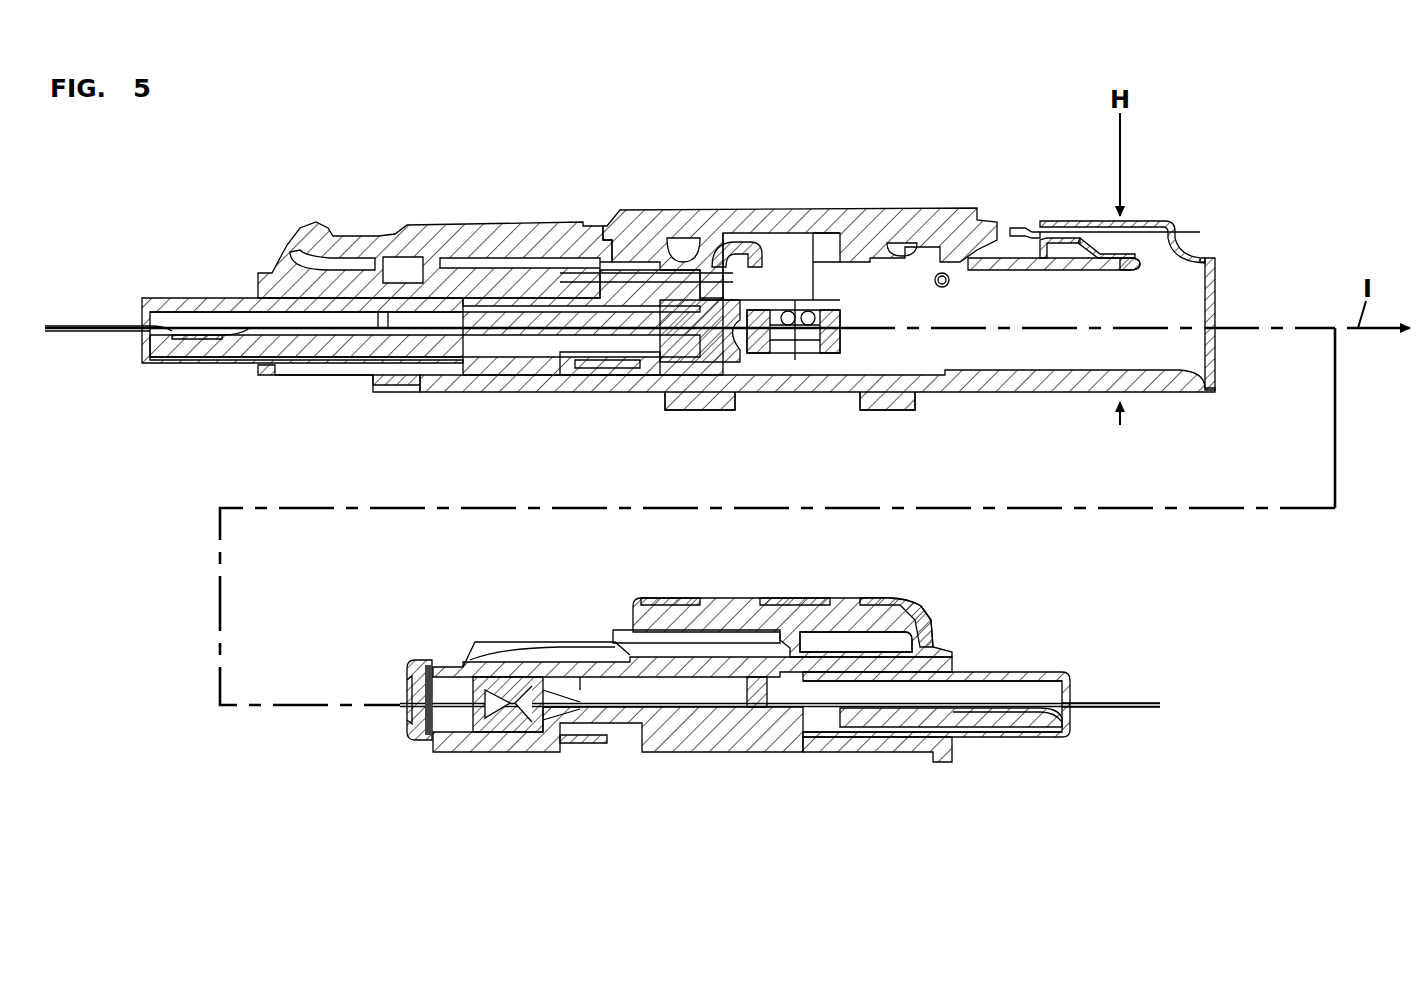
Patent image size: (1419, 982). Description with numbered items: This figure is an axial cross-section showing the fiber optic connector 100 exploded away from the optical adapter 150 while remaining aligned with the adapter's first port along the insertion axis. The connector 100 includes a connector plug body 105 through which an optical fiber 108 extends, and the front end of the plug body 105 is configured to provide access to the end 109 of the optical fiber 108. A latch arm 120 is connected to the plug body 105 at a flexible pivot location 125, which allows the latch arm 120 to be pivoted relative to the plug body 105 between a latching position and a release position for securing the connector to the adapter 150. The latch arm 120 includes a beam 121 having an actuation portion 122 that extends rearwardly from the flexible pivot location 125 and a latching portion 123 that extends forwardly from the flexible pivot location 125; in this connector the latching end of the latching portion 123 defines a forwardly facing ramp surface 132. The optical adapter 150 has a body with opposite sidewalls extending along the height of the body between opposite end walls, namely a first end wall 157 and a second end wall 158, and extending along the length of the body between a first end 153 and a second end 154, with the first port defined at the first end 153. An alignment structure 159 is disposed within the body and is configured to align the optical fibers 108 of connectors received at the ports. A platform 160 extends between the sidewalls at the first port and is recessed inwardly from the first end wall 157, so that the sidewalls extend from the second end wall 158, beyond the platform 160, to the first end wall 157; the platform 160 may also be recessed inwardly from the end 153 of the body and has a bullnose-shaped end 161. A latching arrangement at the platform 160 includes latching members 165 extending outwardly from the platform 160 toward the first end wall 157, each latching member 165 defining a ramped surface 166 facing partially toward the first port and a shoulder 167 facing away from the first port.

The fiber optic connector 100 is at (318, 382).
The connector plug body 105 is at (682, 754).
The optical fiber 108 is at (458, 712).
The end of optical fiber 109 is at (418, 706).
The latch arm 120 is at (434, 206).
The beam 121 is at (790, 600).
The actuation portion 122 is at (865, 610).
The latching portion 123 is at (700, 594).
The flexible pivot location 125 is at (780, 650).
The forwardly facing ramp surface 132 is at (640, 630).
The optical adapter 150 is at (857, 198).
The first end 153 is at (1217, 262).
The second end 154 is at (365, 386).
The first end wall 157 is at (1153, 222).
The second end wall 158 is at (1166, 394).
The alignment structure 159 is at (843, 300).
The platform 160 is at (1038, 268).
The bullnose-shaped end 161 is at (1140, 268).
The latching member 165 is at (1067, 230).
The ramped surface 166 is at (1097, 247).
The shoulder 167 is at (1040, 244).